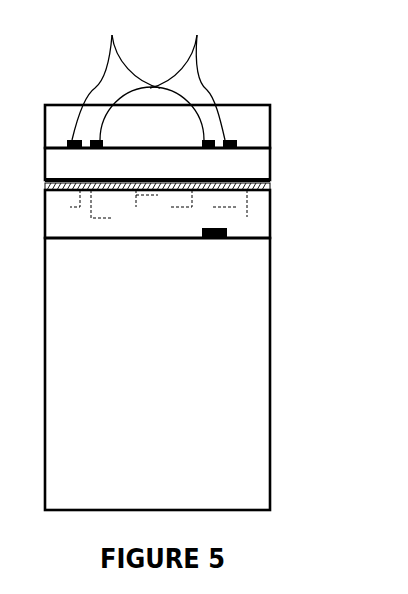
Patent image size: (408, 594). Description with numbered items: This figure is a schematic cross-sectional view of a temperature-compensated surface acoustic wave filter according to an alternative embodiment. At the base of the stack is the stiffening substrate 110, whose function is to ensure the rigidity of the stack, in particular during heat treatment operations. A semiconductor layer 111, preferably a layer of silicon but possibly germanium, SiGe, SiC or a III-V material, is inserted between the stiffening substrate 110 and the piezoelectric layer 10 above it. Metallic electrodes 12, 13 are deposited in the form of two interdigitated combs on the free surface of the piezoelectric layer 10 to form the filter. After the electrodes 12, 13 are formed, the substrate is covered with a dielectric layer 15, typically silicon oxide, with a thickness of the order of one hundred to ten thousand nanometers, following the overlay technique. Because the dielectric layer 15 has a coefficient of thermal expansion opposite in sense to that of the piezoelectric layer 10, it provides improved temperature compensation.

The metallic electrode 12 is at (112, 36).
The metallic electrode 13 is at (197, 36).
The dielectric layer 15 is at (270, 118).
The piezoelectric layer 10 is at (270, 165).
The semiconductor layer 111 is at (270, 218).
The stiffening substrate 110 is at (270, 348).